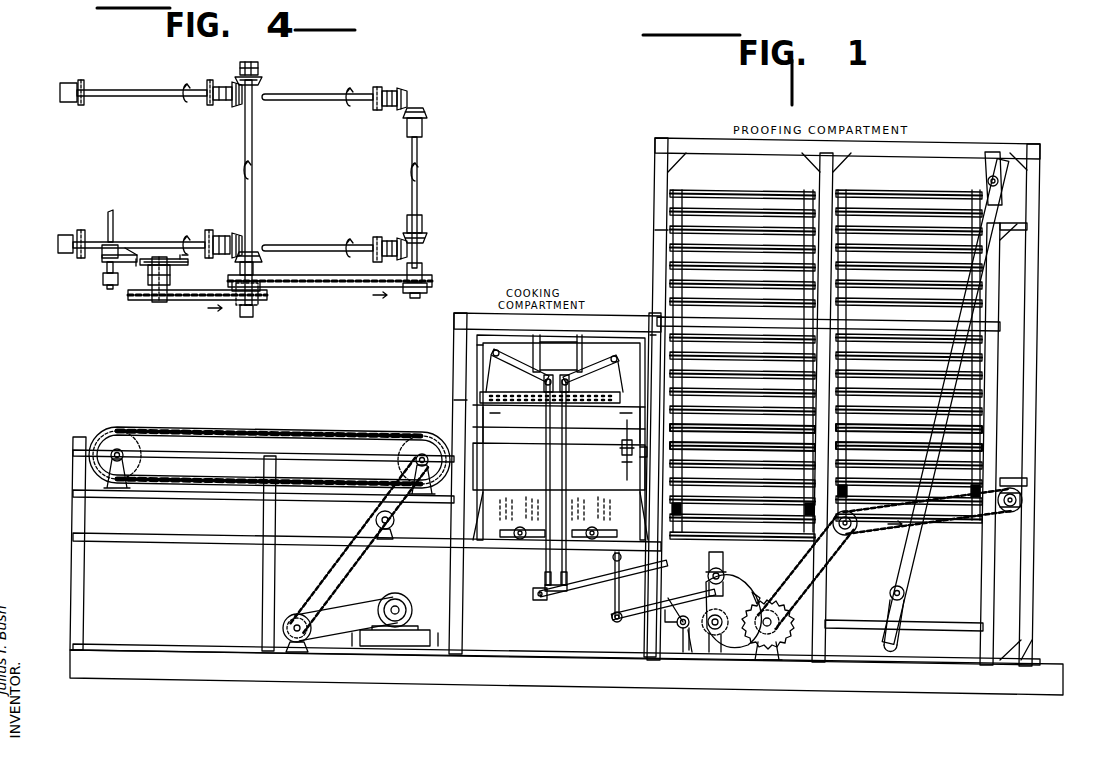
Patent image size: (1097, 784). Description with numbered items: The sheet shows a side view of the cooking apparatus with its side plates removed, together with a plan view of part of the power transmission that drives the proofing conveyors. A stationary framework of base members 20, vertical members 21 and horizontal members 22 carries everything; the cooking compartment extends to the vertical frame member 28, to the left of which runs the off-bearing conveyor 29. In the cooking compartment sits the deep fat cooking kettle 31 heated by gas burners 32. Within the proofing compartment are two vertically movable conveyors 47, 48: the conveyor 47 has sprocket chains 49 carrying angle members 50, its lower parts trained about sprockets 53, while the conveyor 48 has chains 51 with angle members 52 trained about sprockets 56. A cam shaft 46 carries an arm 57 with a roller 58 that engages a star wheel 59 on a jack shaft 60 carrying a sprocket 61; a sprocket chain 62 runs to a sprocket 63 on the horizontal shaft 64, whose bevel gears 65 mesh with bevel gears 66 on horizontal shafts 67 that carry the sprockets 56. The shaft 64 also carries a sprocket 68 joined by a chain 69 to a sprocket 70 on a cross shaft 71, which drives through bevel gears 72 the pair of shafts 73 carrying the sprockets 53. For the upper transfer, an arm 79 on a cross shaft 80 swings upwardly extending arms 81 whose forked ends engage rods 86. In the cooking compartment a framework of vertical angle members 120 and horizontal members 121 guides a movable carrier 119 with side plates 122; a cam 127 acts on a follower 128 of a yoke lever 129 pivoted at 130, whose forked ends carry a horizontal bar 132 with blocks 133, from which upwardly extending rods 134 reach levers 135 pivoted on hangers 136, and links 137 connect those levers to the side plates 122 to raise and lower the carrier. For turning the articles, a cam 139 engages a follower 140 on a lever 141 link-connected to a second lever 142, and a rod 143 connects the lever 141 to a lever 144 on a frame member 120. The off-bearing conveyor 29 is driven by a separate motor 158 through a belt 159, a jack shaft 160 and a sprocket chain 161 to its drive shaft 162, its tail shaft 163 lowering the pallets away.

In FIG. 1, the base members 20 is at (843, 692).
In FIG. 1, the vertical members 21 is at (657, 190).
In FIG. 1, the horizontal members 22 is at (985, 146).
In FIG. 1, the vertical frame member 28 is at (454, 408).
In FIG. 1, the off-bearing conveyor 29 is at (276, 428).
In FIG. 1, the deep fat cooking kettle 31 is at (559, 466).
In FIG. 1, the gas burners 32 is at (505, 545).
In FIG. 4, the cam shaft 46 is at (102, 270).
In FIG. 1, the cam shaft 46 is at (704, 636).
In FIG. 1, the conveyor 47 is at (909, 356).
In FIG. 1, the conveyor 48 is at (742, 365).
In FIG. 1, the sprocket chains 49 is at (845, 418).
In FIG. 1, the angle members 50 is at (876, 438).
In FIG. 1, the sprocket chains 51 is at (682, 420).
In FIG. 1, the angle members 52 is at (723, 442).
In FIG. 4, the sprockets 53 is at (376, 112).
In FIG. 1, the sprockets 53 is at (848, 493).
In FIG. 4, the sprockets 56 is at (82, 80).
In FIG. 1, the sprockets 56 is at (683, 509).
In FIG. 4, the arm 57 is at (113, 245).
In FIG. 1, the arm 57 is at (690, 640).
In FIG. 4, the roller 58 is at (125, 268).
In FIG. 1, the roller 58 is at (681, 632).
In FIG. 4, the star wheel 59 is at (178, 265).
In FIG. 1, the star wheel 59 is at (761, 593).
In FIG. 4, the jack shaft 60 is at (157, 303).
In FIG. 1, the jack shaft 60 is at (756, 642).
In FIG. 4, the sprocket 61 is at (165, 302).
In FIG. 1, the sprocket 61 is at (777, 645).
In FIG. 4, the sprocket chain 62 is at (193, 300).
In FIG. 1, the sprocket chain 62 is at (832, 562).
In FIG. 4, the sprocket 63 is at (253, 317).
In FIG. 1, the sprocket 63 is at (851, 531).
In FIG. 4, the horizontal shaft 64 is at (253, 203).
In FIG. 4, the bevel gears 65 is at (262, 88).
In FIG. 4, the bevel gears 66 is at (238, 108).
In FIG. 4, the horizontal shafts 67 is at (133, 97).
In FIG. 4, the sprocket 68 is at (275, 292).
In FIG. 4, the chain 69 is at (345, 287).
In FIG. 1, the chain 69 is at (942, 519).
In FIG. 4, the sprocket 70 is at (422, 292).
In FIG. 1, the sprocket 70 is at (1022, 506).
In FIG. 4, the cross shaft 71 is at (418, 205).
In FIG. 1, the cross shaft 71 is at (1022, 496).
In FIG. 4, the bevel gears 72 is at (410, 100).
In FIG. 4, the shafts 73 is at (322, 100).
In FIG. 1, the arm 79 is at (893, 650).
In FIG. 1, the cross shaft 80 is at (906, 594).
In FIG. 1, the upwardly extending arm 81 is at (910, 563).
In FIG. 1, the rods 86 is at (1000, 181).
In FIG. 1, the movable carrier 119 is at (550, 408).
In FIG. 1, the vertical angle members 120 is at (477, 345).
In FIG. 1, the horizontal members 121 is at (497, 337).
In FIG. 1, the side plates 122 is at (527, 430).
In FIG. 1, the cam 127 is at (724, 580).
In FIG. 1, the follower 128 is at (724, 566).
In FIG. 1, the yoke lever 129 is at (592, 585).
In FIG. 1, the pivot 130 is at (658, 580).
In FIG. 1, the horizontal bar 132 is at (537, 597).
In FIG. 1, the blocks 133 is at (554, 600).
In FIG. 1, the upwardly extending rods 134 is at (546, 470).
In FIG. 1, the levers 135 is at (522, 366).
In FIG. 1, the hangers 136 is at (541, 354).
In FIG. 1, the links 137 is at (490, 380).
In FIG. 1, the cam 139 is at (716, 636).
In FIG. 1, the follower 140 is at (758, 598).
In FIG. 1, the lever 141 is at (677, 624).
In FIG. 1, the second lever 142 is at (612, 620).
In FIG. 1, the rod 143 is at (614, 560).
In FIG. 1, the lever 144 is at (624, 455).
In FIG. 1, the motor 158 is at (407, 598).
In FIG. 1, the belt 159 is at (364, 604).
In FIG. 1, the jack shaft 160 is at (293, 614).
In FIG. 1, the sprocket chain 161 is at (324, 577).
In FIG. 1, the drive shaft 162 is at (401, 462).
In FIG. 1, the tail shaft 163 is at (116, 450).